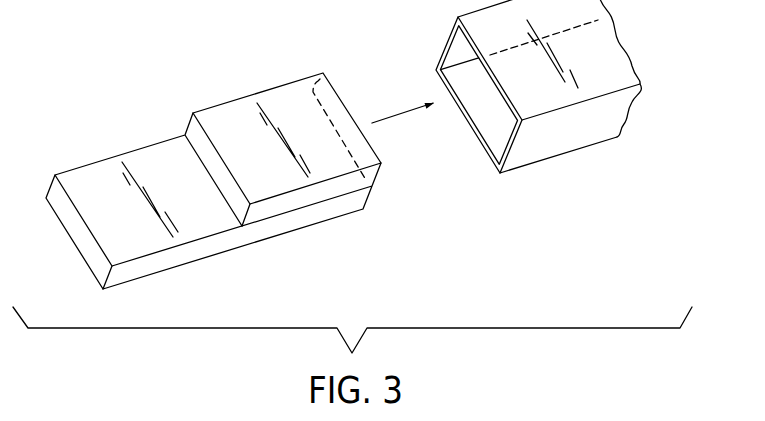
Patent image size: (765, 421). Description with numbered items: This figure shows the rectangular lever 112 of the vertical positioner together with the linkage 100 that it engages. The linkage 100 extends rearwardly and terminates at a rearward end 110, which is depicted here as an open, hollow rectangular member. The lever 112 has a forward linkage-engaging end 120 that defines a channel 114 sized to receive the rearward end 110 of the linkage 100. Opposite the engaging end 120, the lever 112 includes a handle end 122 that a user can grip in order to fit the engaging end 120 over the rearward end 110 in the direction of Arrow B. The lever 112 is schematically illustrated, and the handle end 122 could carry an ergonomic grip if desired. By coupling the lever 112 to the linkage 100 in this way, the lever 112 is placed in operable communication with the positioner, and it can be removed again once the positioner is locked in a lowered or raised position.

The linkage 100 is at (538, 121).
The rearward end 110 is at (528, 158).
The lever 112 is at (118, 155).
The channel 114 is at (302, 188).
The engaging end 120 is at (236, 184).
The handle end 122 is at (87, 190).